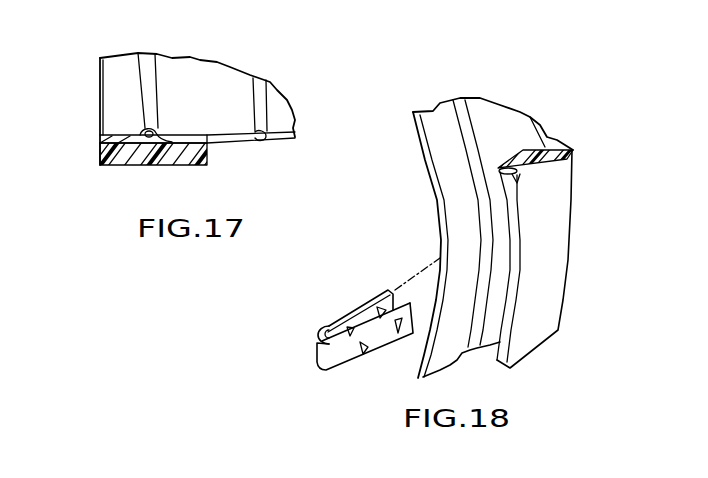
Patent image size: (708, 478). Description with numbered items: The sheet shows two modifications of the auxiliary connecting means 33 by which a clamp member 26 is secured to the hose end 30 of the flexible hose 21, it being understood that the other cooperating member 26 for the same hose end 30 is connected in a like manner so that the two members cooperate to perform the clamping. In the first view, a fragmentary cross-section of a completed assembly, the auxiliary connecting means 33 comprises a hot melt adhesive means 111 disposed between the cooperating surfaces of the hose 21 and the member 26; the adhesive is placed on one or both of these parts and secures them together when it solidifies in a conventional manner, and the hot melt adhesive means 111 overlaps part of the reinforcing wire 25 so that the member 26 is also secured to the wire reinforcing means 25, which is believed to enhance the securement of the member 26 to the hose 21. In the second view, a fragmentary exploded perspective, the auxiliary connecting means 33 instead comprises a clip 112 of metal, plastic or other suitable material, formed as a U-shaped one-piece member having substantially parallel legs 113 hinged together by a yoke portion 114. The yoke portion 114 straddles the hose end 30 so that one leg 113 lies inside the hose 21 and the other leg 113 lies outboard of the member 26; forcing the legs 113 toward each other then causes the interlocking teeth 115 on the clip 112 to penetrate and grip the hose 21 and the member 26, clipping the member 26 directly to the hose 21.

In FIG. 17, the hose 21 is at (217, 67).
In FIG. 18, the hose 21 is at (502, 112).
In FIG. 17, the reinforcing wire 25 is at (160, 128).
In FIG. 17, the member 26 is at (143, 167).
In FIG. 18, the member 26 is at (547, 245).
In FIG. 17, the hose end 30 is at (100, 98).
In FIG. 18, the hose end 30 is at (430, 168).
In FIG. 17, the auxiliary connecting means 33 is at (92, 149).
In FIG. 18, the auxiliary connecting means 33 is at (409, 253).
In FIG. 17, the hot melt adhesive means 111 is at (190, 138).
In FIG. 18, the clip 112 is at (317, 336).
In FIG. 18, the legs 113 is at (377, 295).
In FIG. 18, the yoke portion 114 is at (325, 357).
In FIG. 18, the interlocking teeth 115 is at (378, 311).